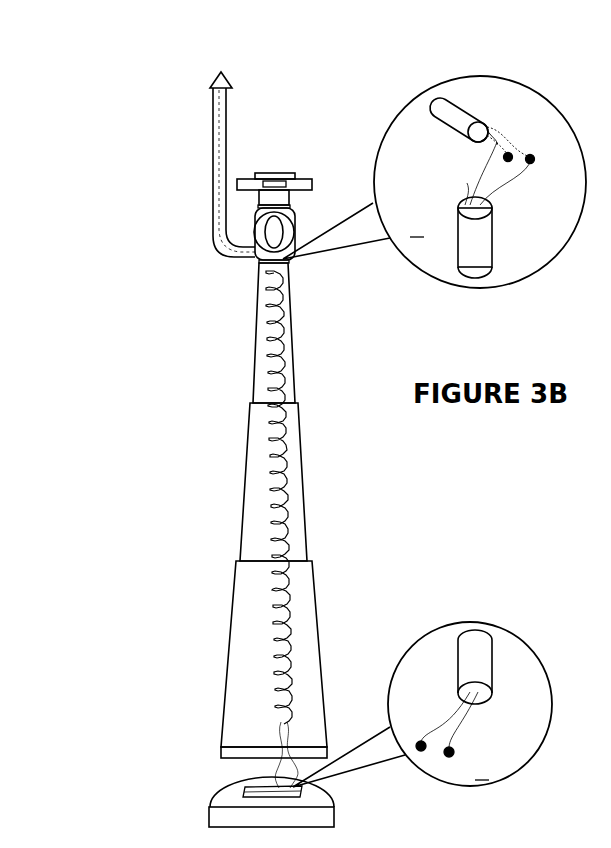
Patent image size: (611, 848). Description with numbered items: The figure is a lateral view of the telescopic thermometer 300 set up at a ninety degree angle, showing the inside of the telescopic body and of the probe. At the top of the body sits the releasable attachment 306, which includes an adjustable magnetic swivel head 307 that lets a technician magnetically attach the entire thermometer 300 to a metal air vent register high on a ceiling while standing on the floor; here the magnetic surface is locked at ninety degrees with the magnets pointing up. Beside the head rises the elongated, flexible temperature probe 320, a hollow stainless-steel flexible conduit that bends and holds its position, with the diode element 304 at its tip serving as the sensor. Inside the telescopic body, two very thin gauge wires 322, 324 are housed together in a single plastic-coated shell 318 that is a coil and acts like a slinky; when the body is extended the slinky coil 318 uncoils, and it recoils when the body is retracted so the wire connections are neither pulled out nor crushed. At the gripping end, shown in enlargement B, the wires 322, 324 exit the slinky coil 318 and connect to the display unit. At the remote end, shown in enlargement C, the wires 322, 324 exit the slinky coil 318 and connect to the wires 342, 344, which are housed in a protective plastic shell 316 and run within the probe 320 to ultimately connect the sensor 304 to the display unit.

The telescopic thermometer 300 is at (194, 500).
The diode element 304 is at (212, 84).
The releasable attachment 306 is at (310, 183).
The adjustable magnetic swivel head 307 is at (288, 232).
The protective plastic shell 316 is at (226, 125).
The slinky coil 318 is at (290, 508).
The flexible temperature probe 320 is at (214, 212).
The thin gauge wire 322 is at (534, 163).
The thin gauge wire 324 is at (467, 183).
The wire 342 is at (487, 147).
The wire 344 is at (497, 135).